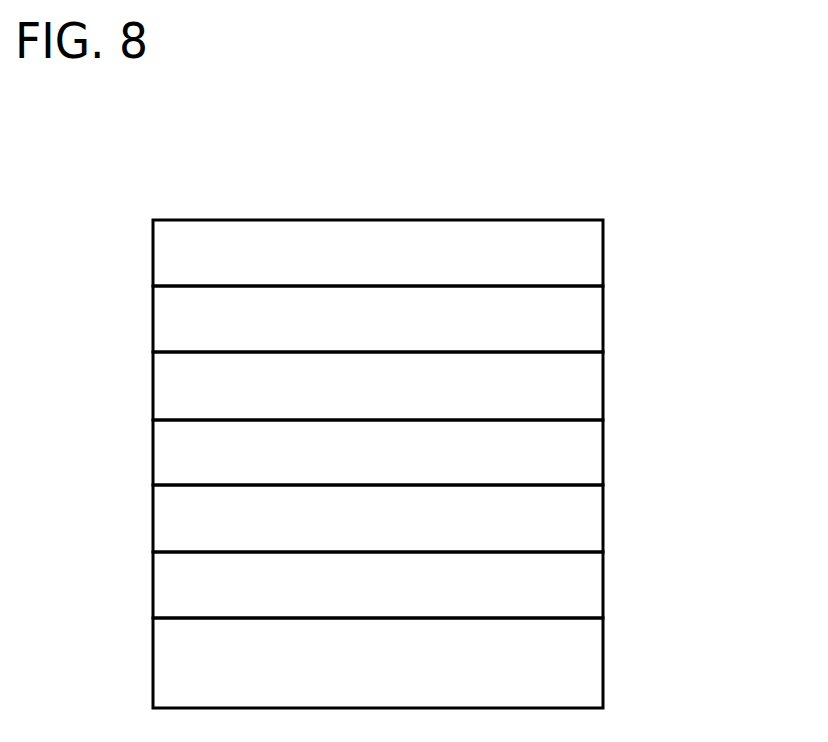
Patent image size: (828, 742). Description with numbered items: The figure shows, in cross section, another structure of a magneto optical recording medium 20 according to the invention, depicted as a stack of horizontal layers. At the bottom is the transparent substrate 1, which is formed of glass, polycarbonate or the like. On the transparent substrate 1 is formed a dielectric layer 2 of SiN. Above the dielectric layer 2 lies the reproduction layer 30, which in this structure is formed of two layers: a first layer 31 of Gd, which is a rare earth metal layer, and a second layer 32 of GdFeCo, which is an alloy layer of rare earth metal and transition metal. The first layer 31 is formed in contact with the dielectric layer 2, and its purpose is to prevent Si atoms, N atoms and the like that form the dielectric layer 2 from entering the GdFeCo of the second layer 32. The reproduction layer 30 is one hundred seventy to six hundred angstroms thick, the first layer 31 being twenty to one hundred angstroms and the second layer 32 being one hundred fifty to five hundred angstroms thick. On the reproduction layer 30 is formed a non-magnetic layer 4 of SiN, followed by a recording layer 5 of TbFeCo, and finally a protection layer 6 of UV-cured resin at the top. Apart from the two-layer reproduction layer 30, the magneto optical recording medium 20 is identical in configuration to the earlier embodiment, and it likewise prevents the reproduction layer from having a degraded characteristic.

The magneto optical recording medium 20 is at (648, 168).
The protection layer 6 is at (588, 260).
The recording layer 5 is at (588, 327).
The non-magnetic layer 4 is at (588, 392).
The reproduction layer 30 is at (469, 486).
The second layer 32 is at (588, 459).
The first layer 31 is at (428, 518).
The dielectric layer 2 is at (588, 592).
The transparent substrate 1 is at (588, 669).